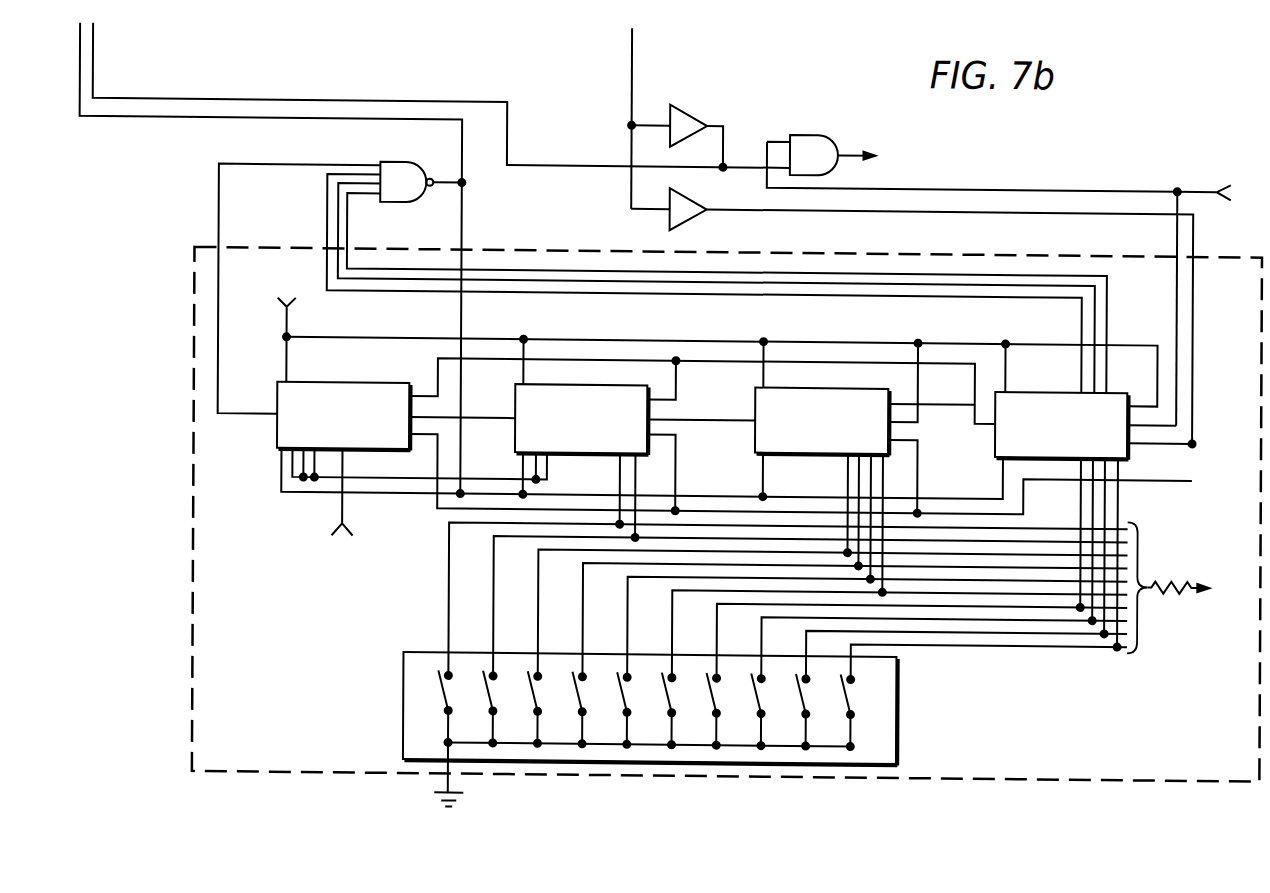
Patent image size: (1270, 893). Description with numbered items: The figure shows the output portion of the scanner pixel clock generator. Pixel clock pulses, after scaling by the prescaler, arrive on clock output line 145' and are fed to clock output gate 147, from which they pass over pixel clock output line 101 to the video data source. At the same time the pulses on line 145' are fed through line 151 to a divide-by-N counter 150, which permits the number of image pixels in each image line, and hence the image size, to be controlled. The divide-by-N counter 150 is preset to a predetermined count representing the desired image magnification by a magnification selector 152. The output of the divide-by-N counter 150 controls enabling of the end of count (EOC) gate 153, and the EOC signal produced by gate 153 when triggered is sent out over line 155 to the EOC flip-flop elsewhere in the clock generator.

The pixel clock output line 101 is at (859, 132).
The clock output line 145' is at (633, 118).
The clock output gate 147 is at (852, 127).
The divide-by-N counter 150 is at (728, 497).
The line 151 is at (874, 213).
The magnification selector 152 is at (404, 668).
The end of count (EOC) gate 153 is at (427, 153).
The line 155 is at (202, 127).